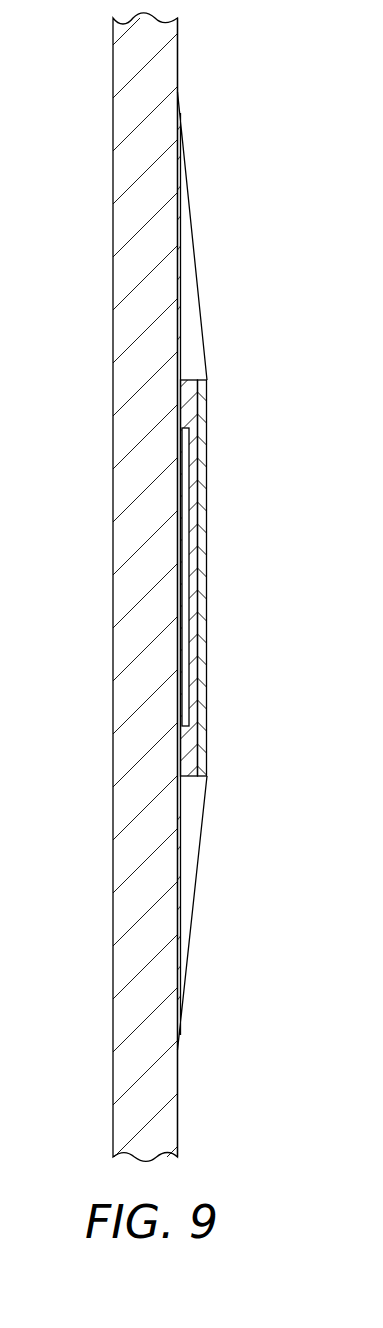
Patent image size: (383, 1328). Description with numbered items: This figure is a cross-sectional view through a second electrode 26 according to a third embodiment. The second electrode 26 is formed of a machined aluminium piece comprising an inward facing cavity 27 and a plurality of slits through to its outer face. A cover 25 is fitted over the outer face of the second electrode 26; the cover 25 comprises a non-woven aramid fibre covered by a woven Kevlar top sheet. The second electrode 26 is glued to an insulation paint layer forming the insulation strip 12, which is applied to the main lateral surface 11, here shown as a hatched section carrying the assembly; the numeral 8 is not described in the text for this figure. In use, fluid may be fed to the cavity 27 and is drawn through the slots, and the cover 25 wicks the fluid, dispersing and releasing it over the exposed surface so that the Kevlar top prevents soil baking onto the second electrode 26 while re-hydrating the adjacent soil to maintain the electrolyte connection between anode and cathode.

The glass pane 8 is at (125, 49).
The main lateral surface 11 is at (179, 49).
The insulation strip 12 is at (193, 232).
The second electrode 26 is at (192, 478).
The cover 25 is at (207, 587).
The cavity 27 is at (183, 695).